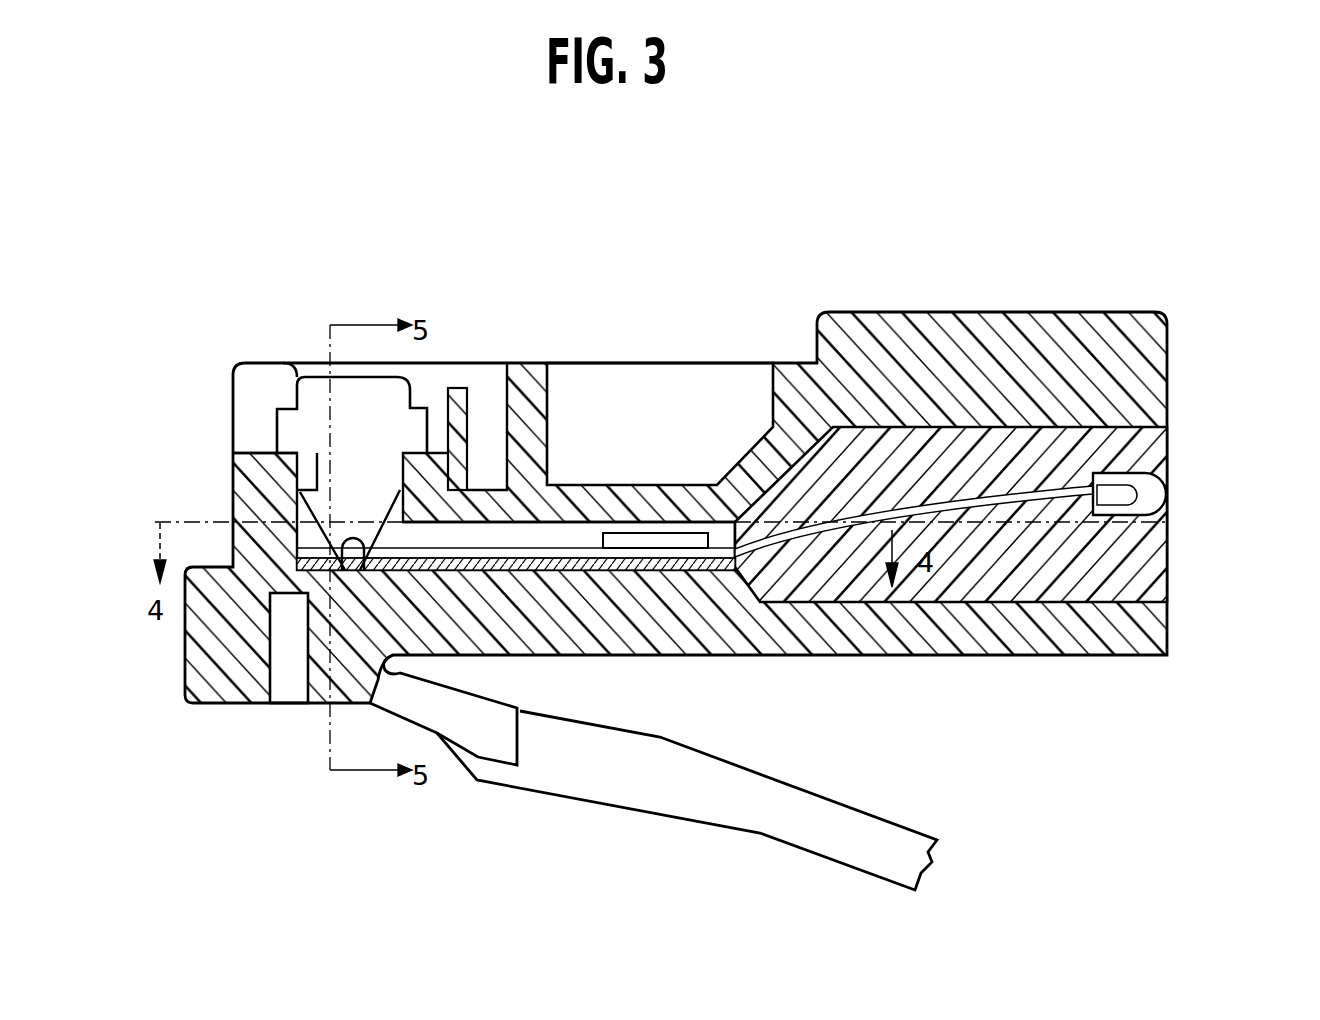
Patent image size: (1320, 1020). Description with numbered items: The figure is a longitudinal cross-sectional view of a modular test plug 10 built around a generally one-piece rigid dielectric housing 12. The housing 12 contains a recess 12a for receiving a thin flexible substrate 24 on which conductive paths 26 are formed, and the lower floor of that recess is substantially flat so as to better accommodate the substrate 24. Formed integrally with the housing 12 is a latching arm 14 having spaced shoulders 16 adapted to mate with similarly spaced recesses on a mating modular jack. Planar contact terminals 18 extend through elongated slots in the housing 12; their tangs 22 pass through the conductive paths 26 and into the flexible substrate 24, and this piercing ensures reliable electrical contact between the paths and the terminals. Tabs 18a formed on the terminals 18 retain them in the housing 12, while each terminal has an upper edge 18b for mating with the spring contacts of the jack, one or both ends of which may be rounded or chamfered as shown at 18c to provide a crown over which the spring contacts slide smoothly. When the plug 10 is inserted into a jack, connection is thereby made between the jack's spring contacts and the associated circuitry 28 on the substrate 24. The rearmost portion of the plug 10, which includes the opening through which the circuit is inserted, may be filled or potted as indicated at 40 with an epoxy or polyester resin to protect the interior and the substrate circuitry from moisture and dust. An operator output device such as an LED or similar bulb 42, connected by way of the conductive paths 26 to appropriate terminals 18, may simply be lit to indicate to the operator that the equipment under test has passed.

The modular plug 10 is at (1044, 233).
The dielectric housing 12 is at (1036, 655).
The recess 12a is at (487, 535).
The latching arm 14 is at (858, 826).
The shoulders 16 is at (520, 743).
The contact terminals 18 is at (307, 404).
The tabs 18a is at (433, 440).
The upper edge 18b is at (320, 372).
The rounded or chamfered end 18c is at (290, 372).
The tangs 22 is at (275, 452).
The flexible substrate 24 is at (718, 572).
The conductive paths 26 is at (665, 572).
The circuitry 28 is at (662, 545).
The potting material 40 is at (1185, 463).
The bulb 42 is at (1168, 496).